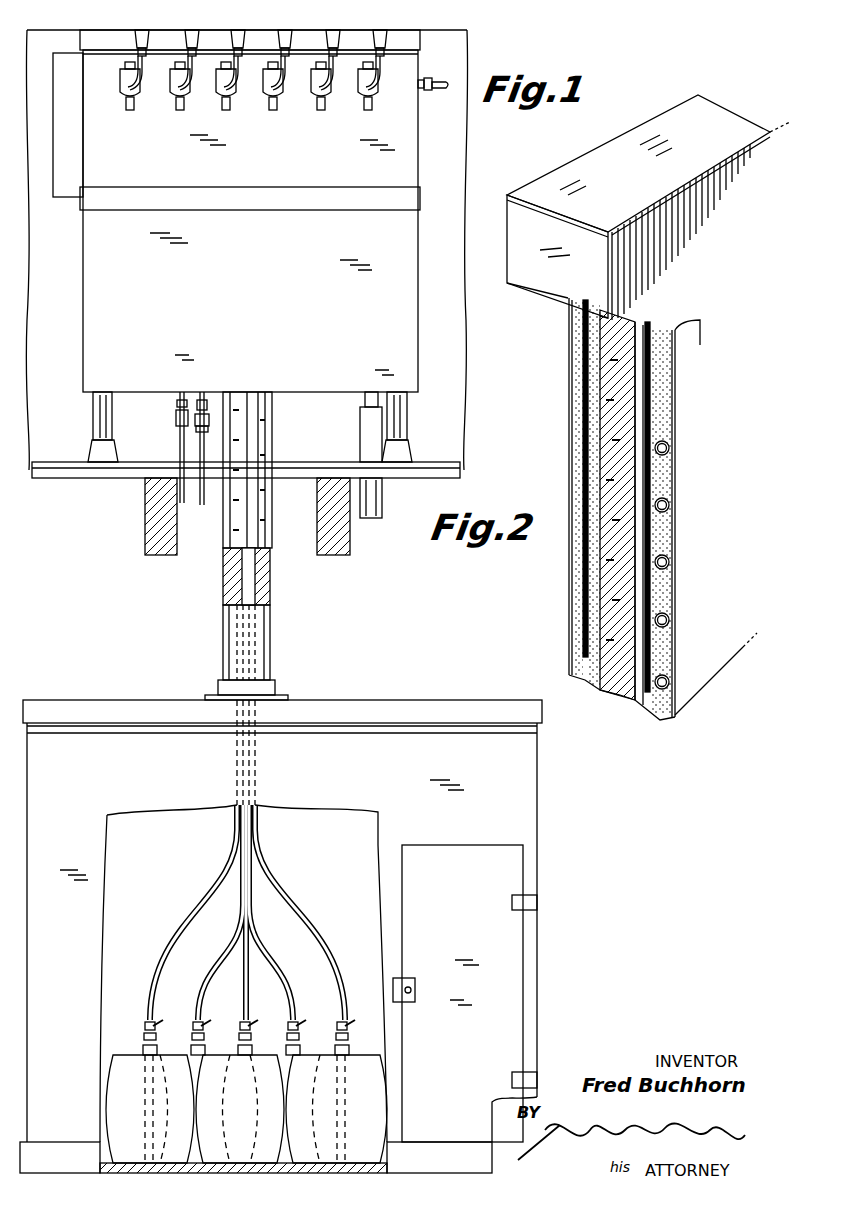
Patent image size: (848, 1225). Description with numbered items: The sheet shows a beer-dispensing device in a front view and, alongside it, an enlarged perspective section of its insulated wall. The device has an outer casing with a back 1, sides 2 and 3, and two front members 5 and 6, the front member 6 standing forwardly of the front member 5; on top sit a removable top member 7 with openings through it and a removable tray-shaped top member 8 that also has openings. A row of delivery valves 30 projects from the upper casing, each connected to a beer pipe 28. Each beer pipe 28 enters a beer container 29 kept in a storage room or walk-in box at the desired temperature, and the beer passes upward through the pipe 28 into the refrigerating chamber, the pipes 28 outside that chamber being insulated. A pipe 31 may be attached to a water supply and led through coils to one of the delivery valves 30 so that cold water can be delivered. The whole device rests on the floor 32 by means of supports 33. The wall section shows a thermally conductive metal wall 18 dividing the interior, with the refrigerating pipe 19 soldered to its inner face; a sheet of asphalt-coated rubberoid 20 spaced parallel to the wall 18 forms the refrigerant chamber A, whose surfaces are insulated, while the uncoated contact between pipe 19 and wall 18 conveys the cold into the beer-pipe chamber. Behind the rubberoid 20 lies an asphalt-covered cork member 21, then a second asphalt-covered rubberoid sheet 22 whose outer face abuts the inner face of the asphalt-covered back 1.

In FIG. 2, the back 1 is at (569, 582).
In FIG. 1, the side 2 is at (418, 300).
In FIG. 1, the side 3 is at (83, 282).
In FIG. 1, the front member 5 is at (406, 152).
In FIG. 1, the front member 6 is at (398, 272).
In FIG. 1, the removable top member 7 is at (355, 38).
In FIG. 1, the removable tray-shaped top member 8 is at (290, 187).
In FIG. 2, the metal wall 18 is at (672, 570).
In FIG. 1, the refrigerating pipe 19 is at (212, 402).
In FIG. 2, the refrigerating pipe 19 is at (669, 452).
In FIG. 2, the sheet of rubberoid 20 is at (647, 598).
In FIG. 2, the cork member 21 is at (610, 597).
In FIG. 2, the sheet of rubberoid covered with asphalt 22 is at (587, 628).
In FIG. 1, the beer pipe 28 is at (258, 590).
In FIG. 1, the beer container 29 is at (175, 1082).
In FIG. 1, the delivery valve 30 is at (175, 104).
In FIG. 1, the pipe 31 is at (448, 72).
In FIG. 1, the floor 32 is at (425, 478).
In FIG. 1, the supports 33 is at (93, 416).
In FIG. 2, the refrigerant chamber A is at (663, 418).